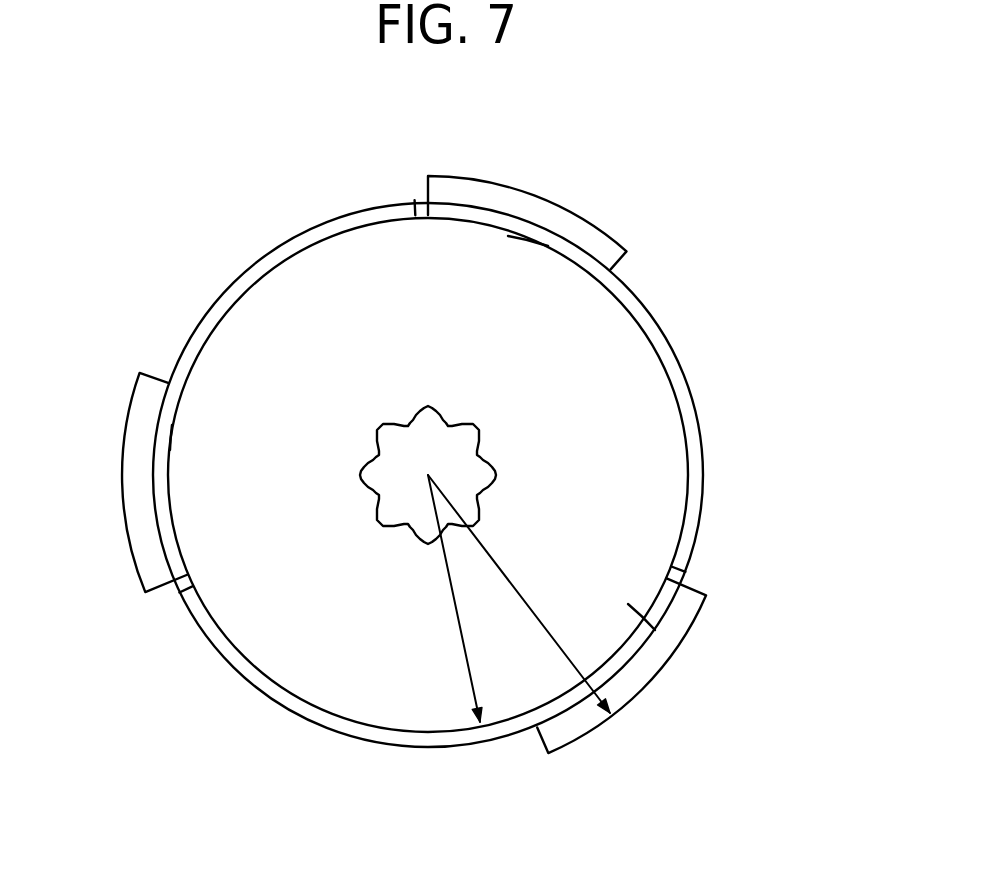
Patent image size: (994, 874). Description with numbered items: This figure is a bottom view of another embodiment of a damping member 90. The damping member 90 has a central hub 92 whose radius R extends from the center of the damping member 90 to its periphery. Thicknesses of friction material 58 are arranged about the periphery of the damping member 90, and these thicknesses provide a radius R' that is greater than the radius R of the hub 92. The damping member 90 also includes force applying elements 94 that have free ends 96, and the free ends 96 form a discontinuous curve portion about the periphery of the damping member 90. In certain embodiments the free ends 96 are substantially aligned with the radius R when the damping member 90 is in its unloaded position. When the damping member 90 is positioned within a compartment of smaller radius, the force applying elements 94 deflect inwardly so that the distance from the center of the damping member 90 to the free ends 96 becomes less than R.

The damping member 90 is at (727, 328).
The hub 92 is at (660, 428).
The force applying elements 94 is at (528, 245).
The friction material 58 is at (547, 210).
The free ends 96 is at (423, 213).
The radius of hub R is at (414, 598).
The radius provided by friction material R' is at (519, 594).